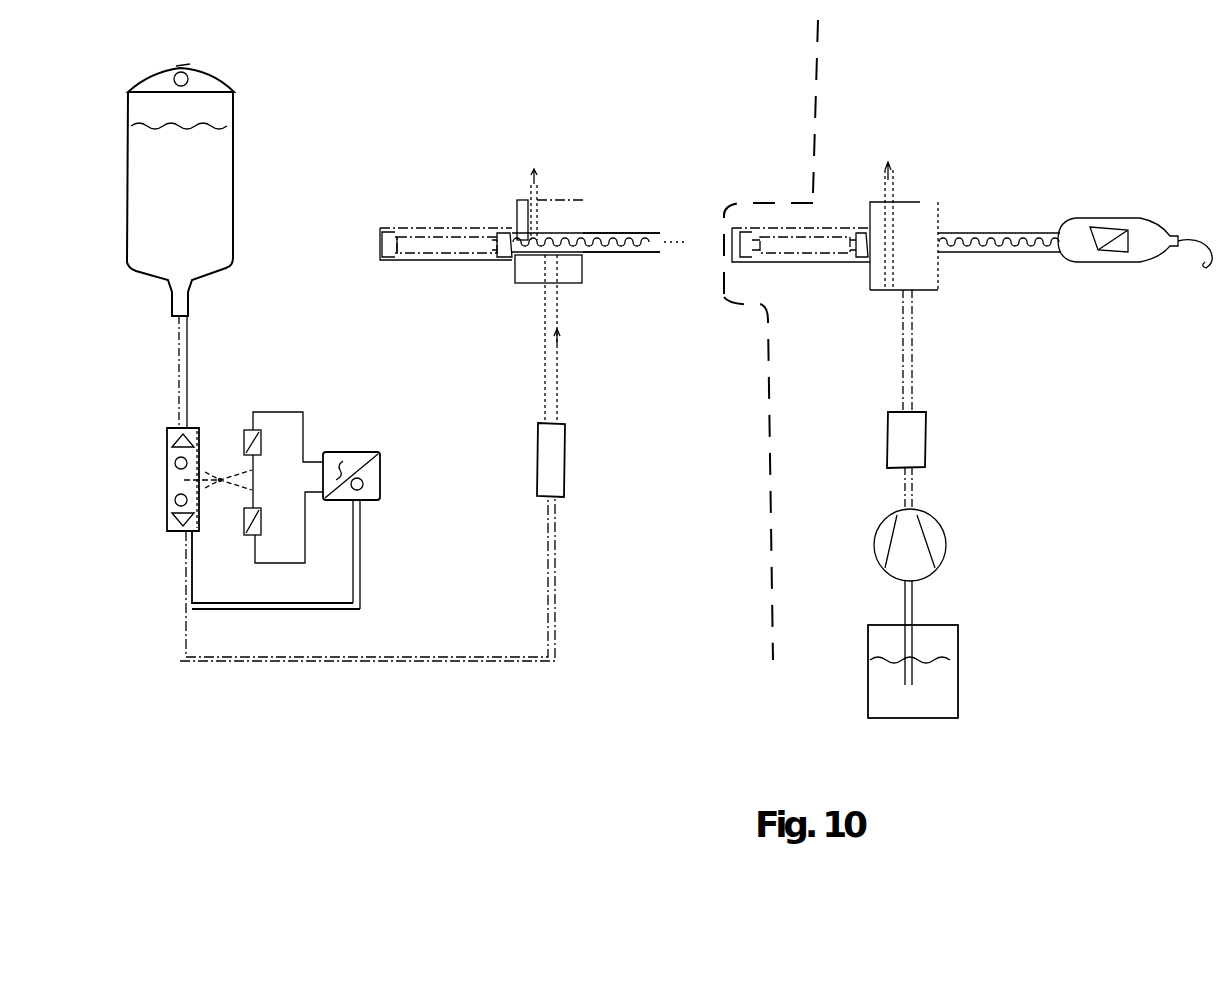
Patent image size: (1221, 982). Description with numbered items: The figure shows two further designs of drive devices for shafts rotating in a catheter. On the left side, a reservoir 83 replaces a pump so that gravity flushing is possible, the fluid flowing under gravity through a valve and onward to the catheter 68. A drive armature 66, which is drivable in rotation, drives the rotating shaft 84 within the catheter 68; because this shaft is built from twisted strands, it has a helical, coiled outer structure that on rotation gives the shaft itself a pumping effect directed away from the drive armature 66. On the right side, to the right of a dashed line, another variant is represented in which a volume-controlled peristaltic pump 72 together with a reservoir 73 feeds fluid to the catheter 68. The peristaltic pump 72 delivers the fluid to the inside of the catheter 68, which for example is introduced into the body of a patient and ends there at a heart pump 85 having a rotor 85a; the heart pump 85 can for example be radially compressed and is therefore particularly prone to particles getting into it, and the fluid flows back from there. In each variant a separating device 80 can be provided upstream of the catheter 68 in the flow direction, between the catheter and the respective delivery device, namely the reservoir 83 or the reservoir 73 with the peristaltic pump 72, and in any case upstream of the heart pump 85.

The drive armature 66 is at (430, 248).
The catheter 68 is at (625, 255).
The peristaltic pump 72 is at (937, 562).
The reservoir 73 is at (948, 682).
The separating device 80 is at (567, 452).
The reservoir 83 is at (213, 167).
The rotating shaft 84 is at (628, 238).
The heart pump 85 is at (1120, 262).
The rotor 85a is at (1128, 235).